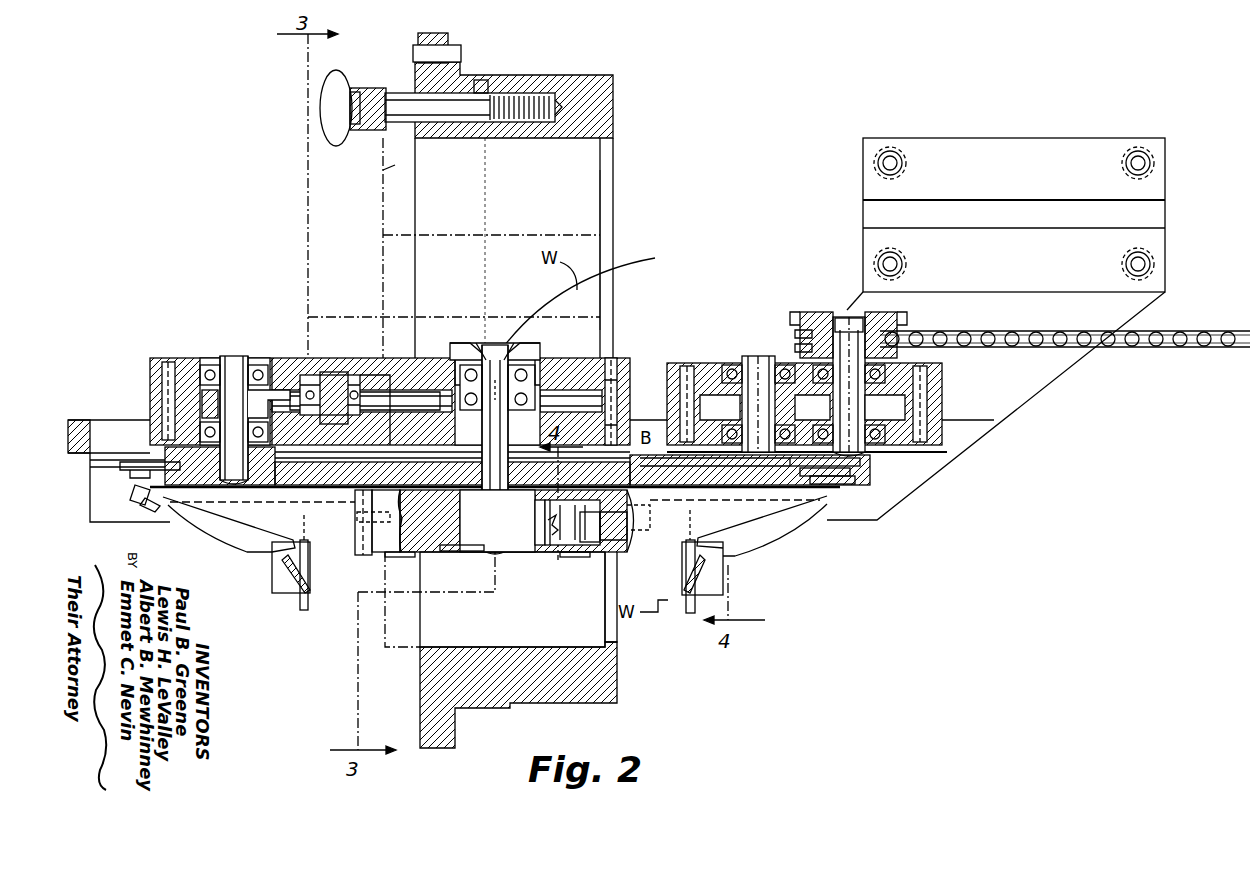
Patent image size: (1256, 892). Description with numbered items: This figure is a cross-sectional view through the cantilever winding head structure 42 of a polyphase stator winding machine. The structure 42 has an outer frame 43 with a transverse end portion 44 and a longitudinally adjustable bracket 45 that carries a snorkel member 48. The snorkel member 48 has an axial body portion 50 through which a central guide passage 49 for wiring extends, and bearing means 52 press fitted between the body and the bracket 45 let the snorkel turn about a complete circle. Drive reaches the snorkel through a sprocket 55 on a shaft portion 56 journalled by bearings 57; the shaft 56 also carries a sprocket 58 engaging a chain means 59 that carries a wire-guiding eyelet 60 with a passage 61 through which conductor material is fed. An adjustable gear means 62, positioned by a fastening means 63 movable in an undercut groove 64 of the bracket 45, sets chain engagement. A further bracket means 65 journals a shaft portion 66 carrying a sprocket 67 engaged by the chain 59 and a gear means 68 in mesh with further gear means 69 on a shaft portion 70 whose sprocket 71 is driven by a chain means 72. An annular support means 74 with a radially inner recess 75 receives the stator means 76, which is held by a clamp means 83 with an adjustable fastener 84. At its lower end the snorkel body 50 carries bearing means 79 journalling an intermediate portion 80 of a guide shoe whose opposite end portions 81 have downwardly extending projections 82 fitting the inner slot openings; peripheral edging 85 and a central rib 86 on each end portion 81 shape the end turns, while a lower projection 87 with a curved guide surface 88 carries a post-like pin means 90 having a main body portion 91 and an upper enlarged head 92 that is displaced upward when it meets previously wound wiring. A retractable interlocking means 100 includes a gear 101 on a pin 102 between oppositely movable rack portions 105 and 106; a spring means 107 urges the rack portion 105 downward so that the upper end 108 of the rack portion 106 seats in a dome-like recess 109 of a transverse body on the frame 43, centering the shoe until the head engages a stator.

The winding head structure 42 is at (640, 420).
The outer frame 43 is at (118, 430).
The transverse end portion 44 is at (75, 430).
The longitudinally adjustable bracket 45 is at (300, 380).
The snorkel member 48 is at (522, 345).
The guide passage 49 is at (490, 345).
The axial body portion 50 is at (478, 357).
The bearing means 52 is at (465, 445).
The sprocket or gear means 55 is at (205, 385).
The shaft portion 56 is at (236, 370).
The bearings 57 is at (258, 378).
The sprocket or gear means 58 is at (200, 470).
The chain means 59 is at (130, 470).
The wire-guiding eyelet 60 is at (150, 505).
The passage 61 is at (135, 495).
The adjustable gear means 62 is at (385, 372).
The fastening means 63 is at (335, 378).
The undercut groove 64 is at (330, 422).
The further bracket means 65 is at (703, 375).
The shaft portion 66 is at (758, 385).
The sprocket or gear means 67 is at (830, 480).
The gear means 68 is at (790, 385).
The further gear means 69 is at (880, 400).
The shaft portion 70 is at (850, 350).
The sprocket 71 is at (830, 340).
The chain means 72 is at (996, 330).
The annular support means 74 is at (602, 82).
The radially inner recess 75 is at (577, 140).
The stator means 76 is at (383, 182).
The bearing means 79 is at (462, 505).
The intermediate portion 80 is at (437, 555).
The opposite end portions 81 is at (365, 540).
The downwardly extending projections 82 is at (400, 555).
The clamp means 83 is at (400, 93).
The adjustable fastener 84 is at (330, 90).
The peripheral edging 85 is at (235, 523).
The central rib 86 is at (225, 545).
The downwardly extending projection 87 is at (272, 560).
The curved end guide surface 88 is at (282, 582).
The post-like pin means 90 is at (305, 600).
The main body portion 91 is at (306, 575).
The upper enlarged head 92 is at (302, 540).
The retractable interlocking means 100 is at (513, 619).
The gear 101 is at (562, 540).
The pin or shaft 102 is at (596, 545).
The rack portion 105 is at (535, 545).
The rack portion 106 is at (622, 552).
The spring means 107 is at (478, 545).
The upper end 108 is at (620, 500).
The dome-like recess 109 is at (558, 480).